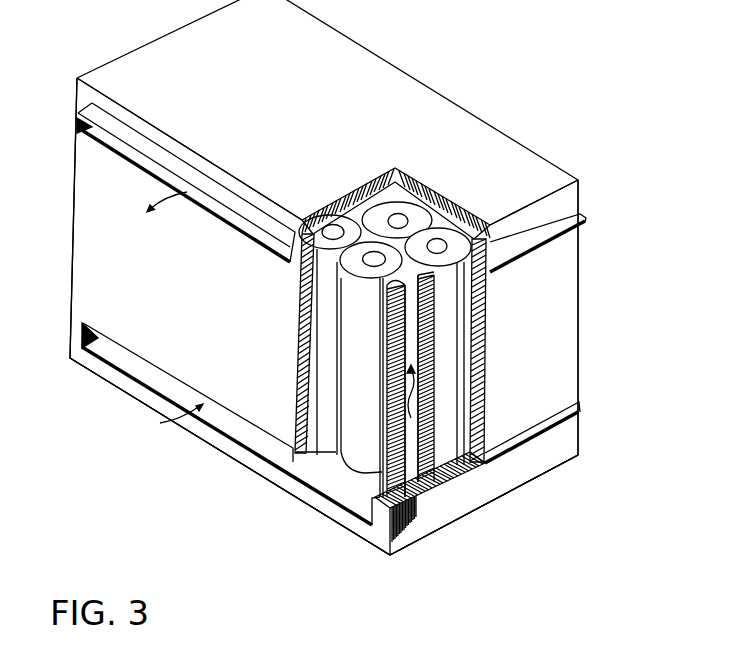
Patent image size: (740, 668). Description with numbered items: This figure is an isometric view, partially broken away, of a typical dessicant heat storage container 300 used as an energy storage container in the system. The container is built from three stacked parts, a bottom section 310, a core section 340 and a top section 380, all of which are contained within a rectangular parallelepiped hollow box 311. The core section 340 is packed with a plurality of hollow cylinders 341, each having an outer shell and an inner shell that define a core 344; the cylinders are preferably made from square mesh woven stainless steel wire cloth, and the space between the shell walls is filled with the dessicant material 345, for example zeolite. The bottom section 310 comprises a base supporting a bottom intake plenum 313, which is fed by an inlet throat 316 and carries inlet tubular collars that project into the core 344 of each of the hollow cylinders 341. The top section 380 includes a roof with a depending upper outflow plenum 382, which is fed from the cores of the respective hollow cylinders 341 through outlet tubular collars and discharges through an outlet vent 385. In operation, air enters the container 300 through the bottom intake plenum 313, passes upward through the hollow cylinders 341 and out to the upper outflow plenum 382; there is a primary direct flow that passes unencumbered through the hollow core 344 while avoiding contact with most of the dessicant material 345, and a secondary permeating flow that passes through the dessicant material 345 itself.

The dessicant heat storage container 300 is at (495, 112).
The top section 380 is at (542, 174).
The outlet vent 385 is at (131, 157).
The rectangular parallelepiped hollow box 311 is at (112, 243).
The upper outflow plenum 382 is at (492, 243).
The core section 340 is at (550, 300).
The bottom section 310 is at (580, 378).
The inlet throat 316 is at (272, 448).
The dessicant material 345 is at (392, 430).
The core 344 is at (387, 470).
The bottom intake plenum 313 is at (440, 472).
The hollow cylinders 341 is at (455, 450).